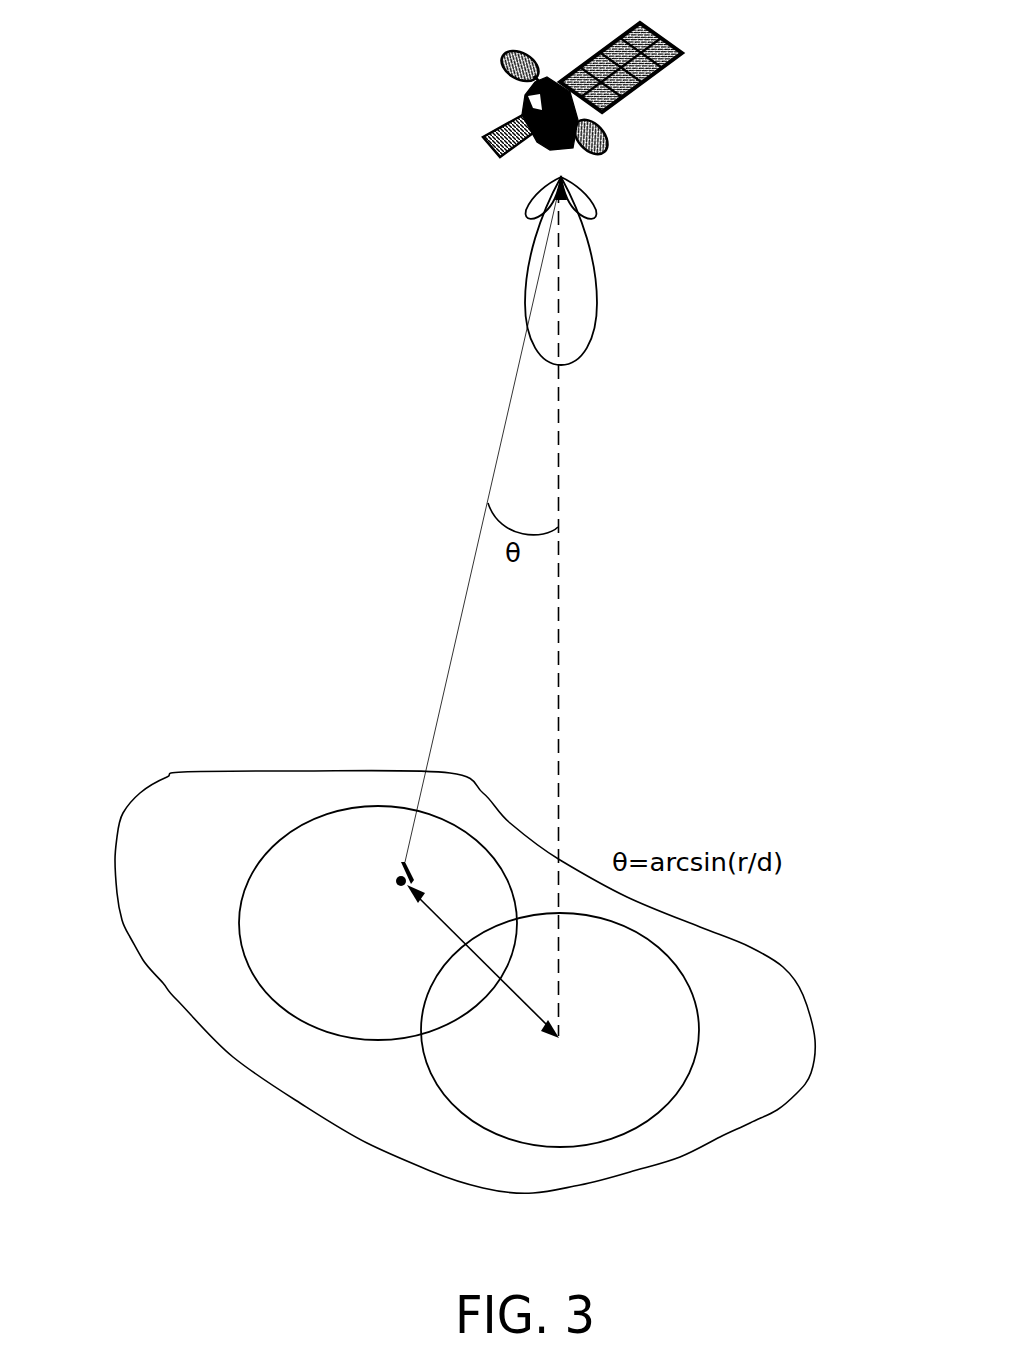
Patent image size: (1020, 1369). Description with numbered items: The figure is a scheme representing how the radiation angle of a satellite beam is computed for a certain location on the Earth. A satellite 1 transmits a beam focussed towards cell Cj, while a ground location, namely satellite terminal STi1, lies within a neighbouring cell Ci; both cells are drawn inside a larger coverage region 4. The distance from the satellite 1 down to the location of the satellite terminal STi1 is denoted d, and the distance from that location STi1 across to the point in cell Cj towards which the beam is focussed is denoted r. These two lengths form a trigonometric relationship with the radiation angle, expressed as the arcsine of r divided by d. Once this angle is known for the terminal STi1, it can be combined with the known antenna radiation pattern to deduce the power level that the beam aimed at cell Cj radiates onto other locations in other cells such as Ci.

The satellite 1 is at (500, 93).
The coverage zone 4 is at (183, 772).
The cell Ci is at (287, 1010).
The cell Cj is at (645, 1123).
The satellite terminal STi1 is at (365, 882).
The distance from the satellite to location STi1 d is at (481, 532).
The distance from location STi1 to the beam focus location r is at (483, 961).